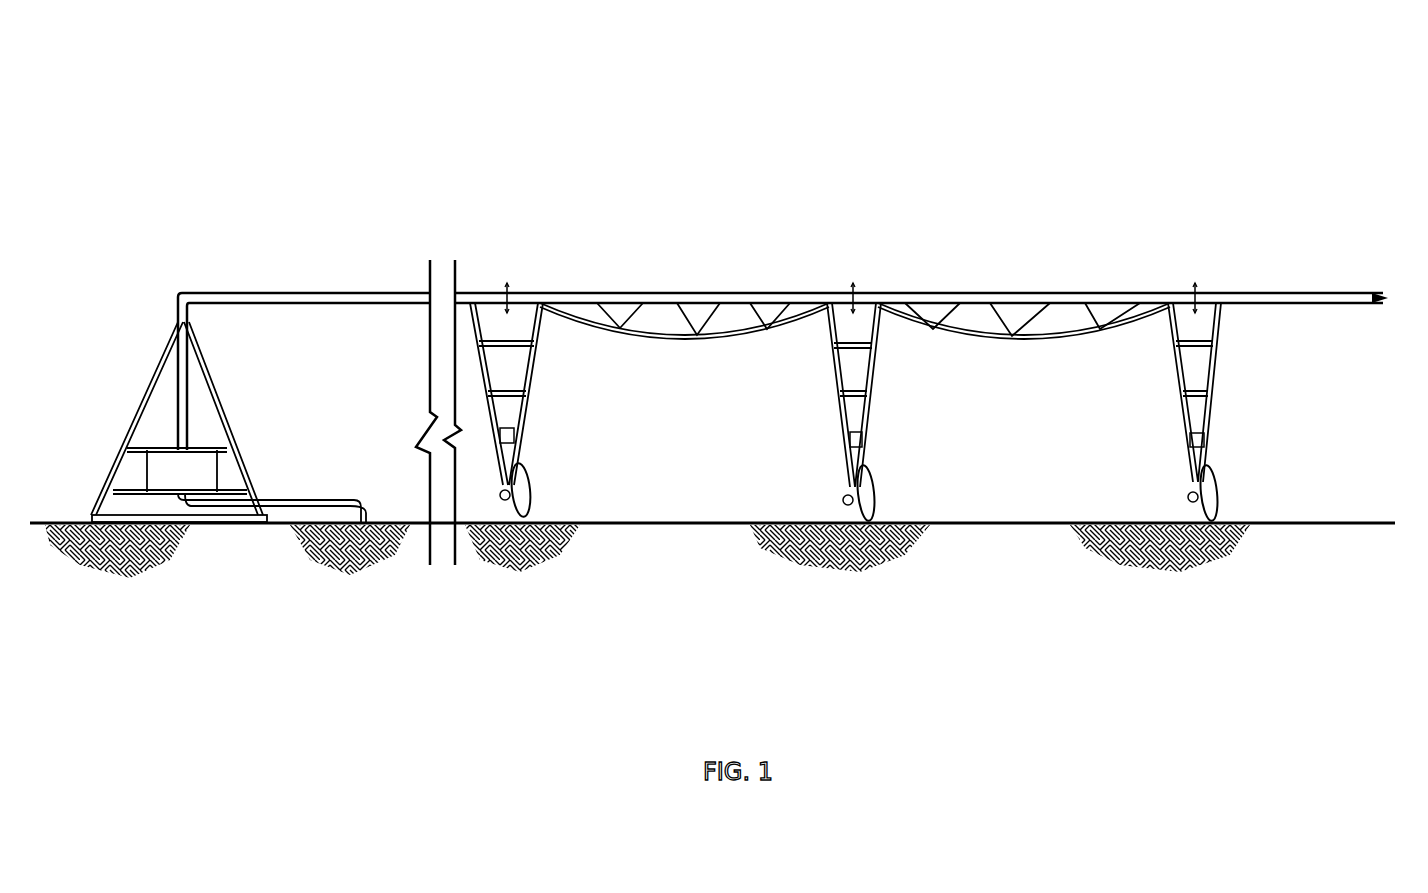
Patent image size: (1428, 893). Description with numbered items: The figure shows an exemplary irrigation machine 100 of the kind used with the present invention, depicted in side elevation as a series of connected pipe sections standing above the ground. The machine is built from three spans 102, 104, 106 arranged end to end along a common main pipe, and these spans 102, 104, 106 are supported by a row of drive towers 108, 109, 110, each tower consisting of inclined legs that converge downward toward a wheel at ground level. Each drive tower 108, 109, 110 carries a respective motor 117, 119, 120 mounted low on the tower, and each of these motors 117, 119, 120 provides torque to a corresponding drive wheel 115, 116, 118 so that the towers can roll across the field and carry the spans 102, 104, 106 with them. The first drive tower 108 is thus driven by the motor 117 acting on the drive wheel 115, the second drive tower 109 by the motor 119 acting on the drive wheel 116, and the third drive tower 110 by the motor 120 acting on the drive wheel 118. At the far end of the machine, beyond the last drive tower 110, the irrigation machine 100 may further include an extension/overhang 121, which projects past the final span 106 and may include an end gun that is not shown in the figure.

The irrigation machine 100 is at (787, 117).
The span 102 is at (245, 293).
The span 104 is at (645, 293).
The span 106 is at (1003, 293).
The drive tower 108 is at (528, 378).
The drive tower 109 is at (863, 382).
The drive tower 110 is at (1215, 395).
The drive wheel 115 is at (530, 493).
The drive wheel 116 is at (868, 437).
The motor 117 is at (513, 433).
The drive wheel 118 is at (1218, 497).
The motor 119 is at (875, 493).
The motor 120 is at (1212, 438).
The extension/overhang 121 is at (1370, 294).